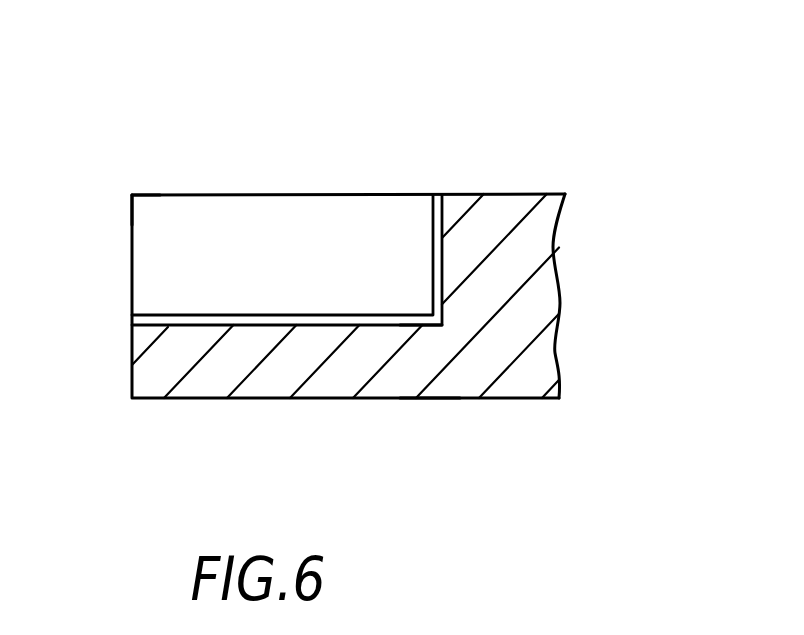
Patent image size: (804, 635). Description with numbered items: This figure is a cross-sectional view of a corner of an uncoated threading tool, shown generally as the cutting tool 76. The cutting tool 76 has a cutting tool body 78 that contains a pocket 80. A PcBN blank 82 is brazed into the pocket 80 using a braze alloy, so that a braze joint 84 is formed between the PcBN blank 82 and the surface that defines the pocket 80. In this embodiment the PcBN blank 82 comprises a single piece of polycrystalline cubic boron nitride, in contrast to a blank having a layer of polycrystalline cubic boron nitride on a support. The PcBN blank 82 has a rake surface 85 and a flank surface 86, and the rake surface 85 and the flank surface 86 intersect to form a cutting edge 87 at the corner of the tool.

The cutting tool 76 is at (565, 100).
The cutting tool body 78 is at (527, 354).
The pocket 80 is at (415, 327).
The PcBN blank 82 is at (404, 268).
The braze joint 84 is at (432, 216).
The rake surface 85 is at (316, 194).
The flank surface 86 is at (230, 238).
The cutting edge 87 is at (132, 196).